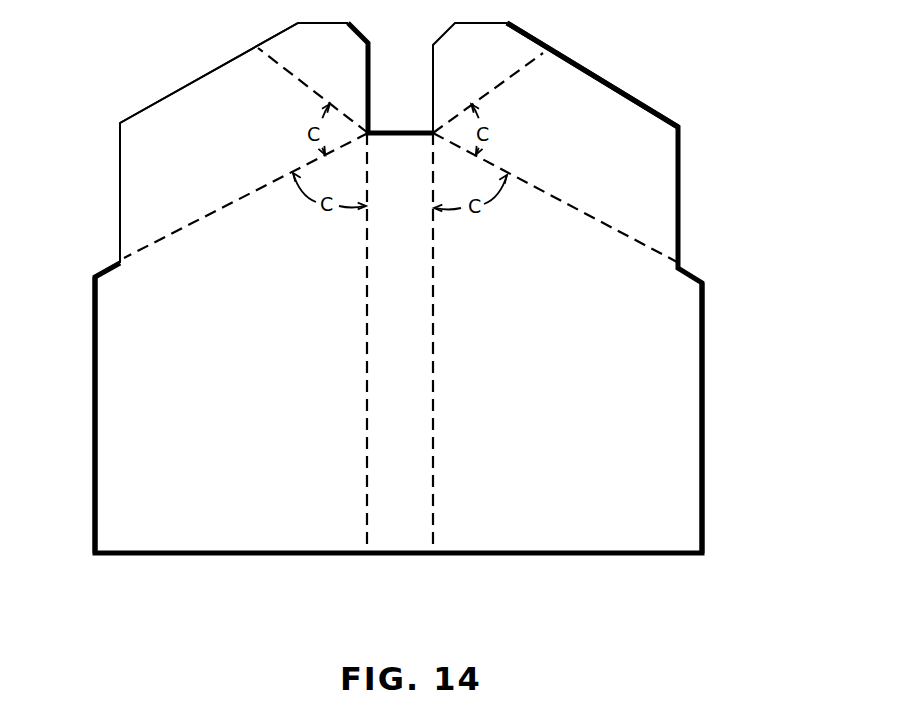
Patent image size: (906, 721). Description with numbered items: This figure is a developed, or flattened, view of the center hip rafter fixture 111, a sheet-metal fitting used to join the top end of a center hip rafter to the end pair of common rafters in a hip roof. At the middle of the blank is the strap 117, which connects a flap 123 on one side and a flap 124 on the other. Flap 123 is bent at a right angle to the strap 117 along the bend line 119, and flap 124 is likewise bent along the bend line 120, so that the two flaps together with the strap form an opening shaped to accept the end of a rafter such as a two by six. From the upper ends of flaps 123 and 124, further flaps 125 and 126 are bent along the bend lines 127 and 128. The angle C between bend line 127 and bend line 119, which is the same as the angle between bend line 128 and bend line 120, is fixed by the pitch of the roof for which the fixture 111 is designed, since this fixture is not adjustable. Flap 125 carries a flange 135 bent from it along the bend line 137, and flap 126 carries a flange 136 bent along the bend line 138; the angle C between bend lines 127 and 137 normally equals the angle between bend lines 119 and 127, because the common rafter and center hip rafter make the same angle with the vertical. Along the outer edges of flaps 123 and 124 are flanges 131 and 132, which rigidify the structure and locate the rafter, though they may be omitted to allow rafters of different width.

The center hip rafter fixture 111 is at (708, 295).
The strap 117 is at (414, 534).
The bend line 119 is at (365, 398).
The bend line 120 is at (434, 398).
The flap 123 is at (209, 389).
The flap 124 is at (633, 389).
The flap 125 is at (204, 174).
The flap 126 is at (608, 174).
The bend line 127 is at (192, 223).
The bend line 128 is at (606, 230).
The flange 131 is at (94, 337).
The flange 132 is at (704, 352).
The flange 135 is at (302, 36).
The flange 136 is at (502, 40).
The bend line 137 is at (316, 98).
The bend line 138 is at (478, 104).